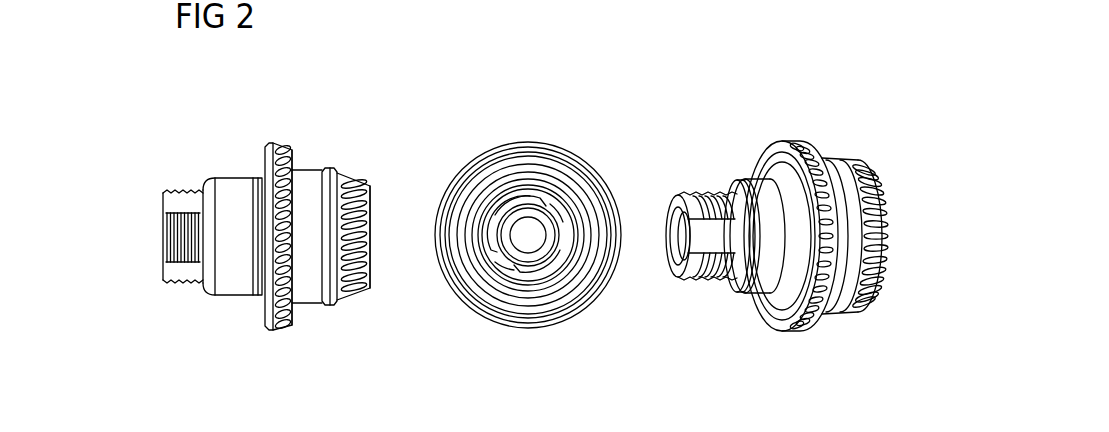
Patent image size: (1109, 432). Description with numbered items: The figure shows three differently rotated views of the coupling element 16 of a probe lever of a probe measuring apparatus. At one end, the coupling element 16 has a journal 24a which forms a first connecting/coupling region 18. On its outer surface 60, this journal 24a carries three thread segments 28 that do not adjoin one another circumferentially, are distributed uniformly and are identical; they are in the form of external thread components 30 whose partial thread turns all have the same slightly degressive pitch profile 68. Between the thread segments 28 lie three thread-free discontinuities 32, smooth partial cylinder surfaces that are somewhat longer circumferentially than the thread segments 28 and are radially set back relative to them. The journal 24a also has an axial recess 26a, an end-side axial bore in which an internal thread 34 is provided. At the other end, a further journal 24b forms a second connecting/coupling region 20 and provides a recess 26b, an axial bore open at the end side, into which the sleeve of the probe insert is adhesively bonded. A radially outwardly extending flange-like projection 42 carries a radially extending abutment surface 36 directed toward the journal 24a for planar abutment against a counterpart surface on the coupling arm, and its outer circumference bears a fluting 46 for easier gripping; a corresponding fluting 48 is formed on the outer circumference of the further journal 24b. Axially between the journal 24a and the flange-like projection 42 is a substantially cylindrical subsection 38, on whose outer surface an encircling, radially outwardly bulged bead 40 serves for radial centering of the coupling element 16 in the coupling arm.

The coupling element 16 is at (322, 115).
The first connecting/coupling region 18 is at (172, 300).
The second connecting/coupling region 20 is at (393, 150).
The journal 24a is at (444, 221).
The further journal 24b is at (636, 231).
The axial recess 26a is at (138, 223).
The recess 26b is at (395, 222).
The thread segments 28 is at (463, 231).
The external thread components 30 is at (612, 155).
The discontinuities 32 is at (183, 205).
The internal thread 34 is at (716, 167).
The abutment surface 36 is at (263, 315).
The cylindrical subsection 38 is at (237, 155).
The bead 40 is at (233, 278).
The flange-like projection 42 is at (283, 125).
The fluting 46 is at (284, 322).
The fluting 48 is at (345, 300).
The outer surface 60 is at (215, 190).
The degressive pitch profile 68 is at (163, 237).